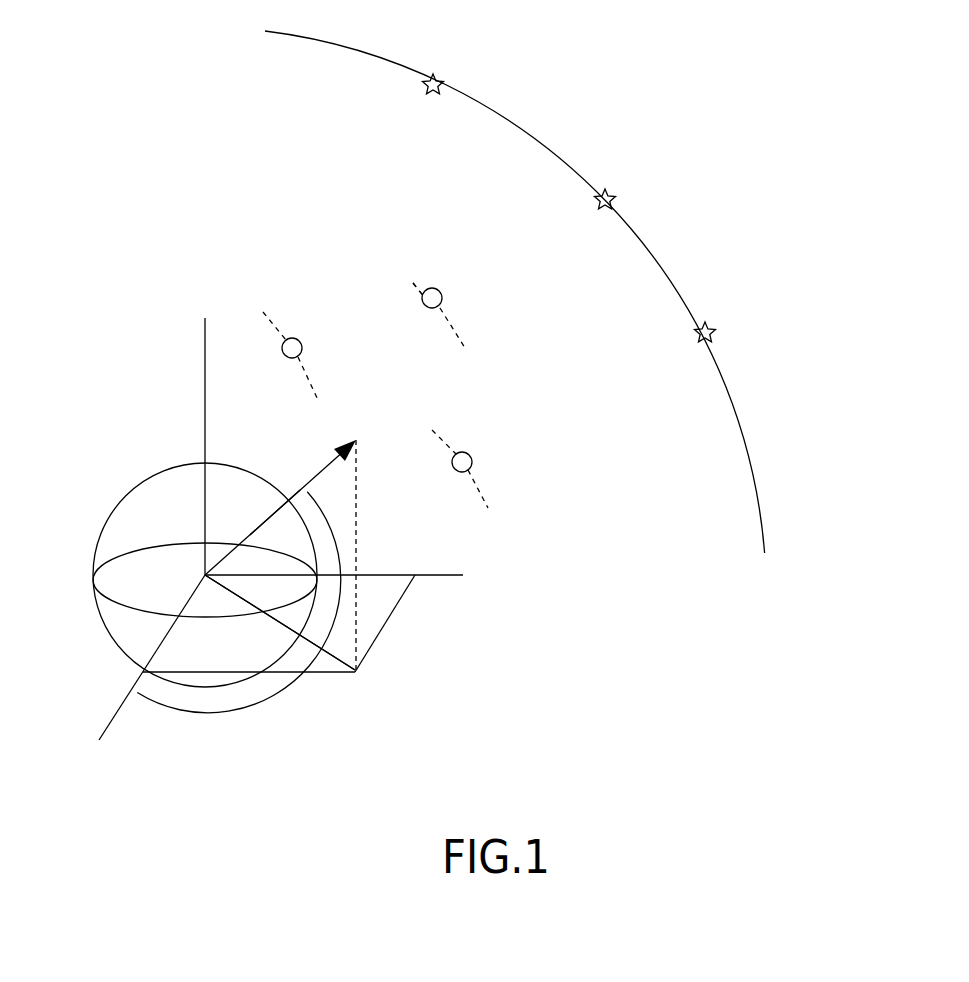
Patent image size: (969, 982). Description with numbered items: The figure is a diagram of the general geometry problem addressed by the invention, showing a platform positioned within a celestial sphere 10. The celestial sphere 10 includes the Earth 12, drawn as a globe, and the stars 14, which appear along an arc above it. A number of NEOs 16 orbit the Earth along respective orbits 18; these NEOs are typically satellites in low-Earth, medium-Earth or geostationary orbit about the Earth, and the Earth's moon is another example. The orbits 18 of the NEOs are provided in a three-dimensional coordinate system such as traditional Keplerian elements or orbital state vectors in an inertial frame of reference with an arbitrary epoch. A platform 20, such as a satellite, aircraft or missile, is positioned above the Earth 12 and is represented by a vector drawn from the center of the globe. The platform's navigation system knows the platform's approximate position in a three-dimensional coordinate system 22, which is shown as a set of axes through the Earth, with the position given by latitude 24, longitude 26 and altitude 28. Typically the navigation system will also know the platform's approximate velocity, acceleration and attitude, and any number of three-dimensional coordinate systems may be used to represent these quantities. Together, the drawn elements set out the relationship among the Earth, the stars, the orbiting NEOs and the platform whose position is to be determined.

The celestial sphere 10 is at (764, 500).
The Earth 12 is at (106, 520).
The stars 14 is at (590, 198).
The NEOs 16 is at (450, 304).
The orbits 18 is at (400, 277).
The platform 20 is at (341, 449).
The three-dimensional coordinate system 22 is at (108, 718).
The latitude 24 is at (342, 620).
The longitude 26 is at (244, 712).
The altitude 28 is at (303, 480).